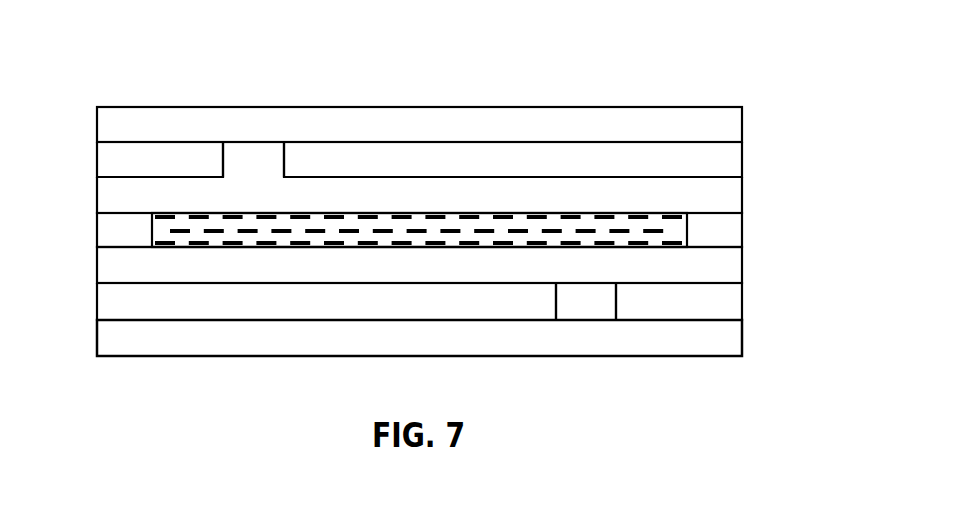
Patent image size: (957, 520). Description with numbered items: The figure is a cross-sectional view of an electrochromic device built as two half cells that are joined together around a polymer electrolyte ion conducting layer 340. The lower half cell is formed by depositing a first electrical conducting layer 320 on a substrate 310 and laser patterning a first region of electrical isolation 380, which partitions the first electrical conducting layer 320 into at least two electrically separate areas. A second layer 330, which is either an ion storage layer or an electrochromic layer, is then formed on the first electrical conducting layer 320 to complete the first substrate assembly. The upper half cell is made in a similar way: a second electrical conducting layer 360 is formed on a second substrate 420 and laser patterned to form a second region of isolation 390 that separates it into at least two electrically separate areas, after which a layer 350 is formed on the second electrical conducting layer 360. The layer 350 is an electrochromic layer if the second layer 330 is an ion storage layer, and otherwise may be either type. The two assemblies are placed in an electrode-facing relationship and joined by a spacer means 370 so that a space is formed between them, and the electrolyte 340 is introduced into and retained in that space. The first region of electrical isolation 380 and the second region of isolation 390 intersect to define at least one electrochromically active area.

The substrate 310 is at (115, 337).
The first electrical conducting layer 320 is at (707, 298).
The second layer 330 is at (718, 263).
The polymer electrolyte ion conducting layer 340 is at (687, 222).
The layer 350 is at (123, 193).
The second electrical conducting layer 360 is at (107, 163).
The spacer means 370 is at (122, 230).
The first region of electrical isolation 380 is at (593, 298).
The second region of isolation 390 is at (257, 160).
The second substrate 420 is at (117, 122).